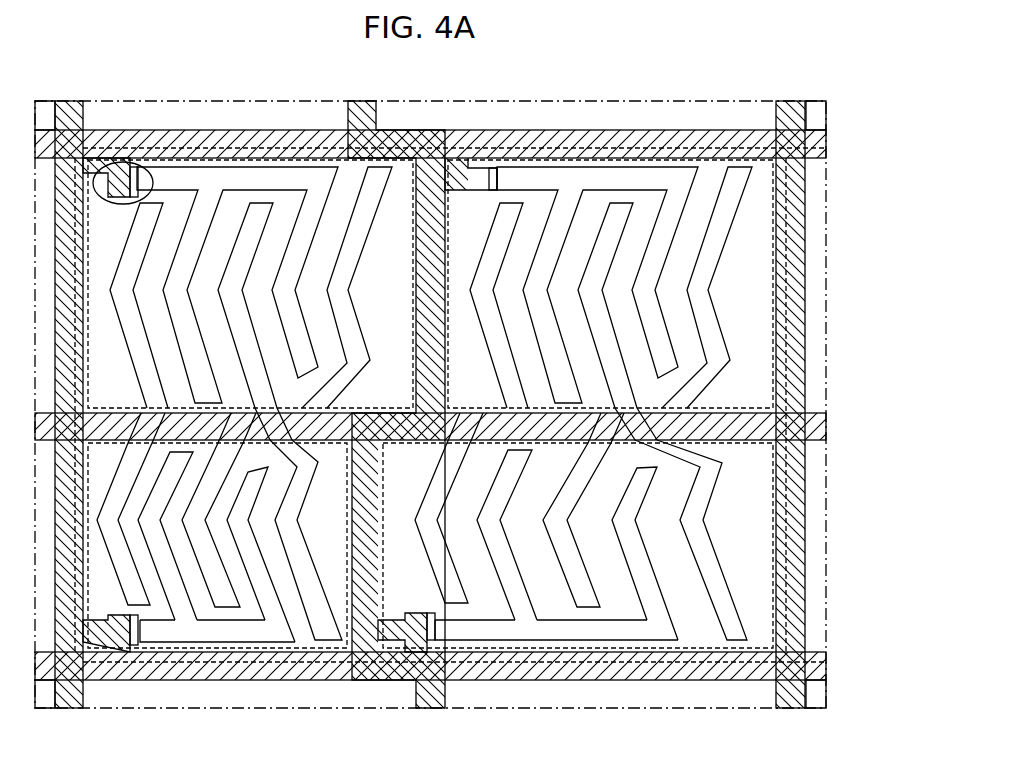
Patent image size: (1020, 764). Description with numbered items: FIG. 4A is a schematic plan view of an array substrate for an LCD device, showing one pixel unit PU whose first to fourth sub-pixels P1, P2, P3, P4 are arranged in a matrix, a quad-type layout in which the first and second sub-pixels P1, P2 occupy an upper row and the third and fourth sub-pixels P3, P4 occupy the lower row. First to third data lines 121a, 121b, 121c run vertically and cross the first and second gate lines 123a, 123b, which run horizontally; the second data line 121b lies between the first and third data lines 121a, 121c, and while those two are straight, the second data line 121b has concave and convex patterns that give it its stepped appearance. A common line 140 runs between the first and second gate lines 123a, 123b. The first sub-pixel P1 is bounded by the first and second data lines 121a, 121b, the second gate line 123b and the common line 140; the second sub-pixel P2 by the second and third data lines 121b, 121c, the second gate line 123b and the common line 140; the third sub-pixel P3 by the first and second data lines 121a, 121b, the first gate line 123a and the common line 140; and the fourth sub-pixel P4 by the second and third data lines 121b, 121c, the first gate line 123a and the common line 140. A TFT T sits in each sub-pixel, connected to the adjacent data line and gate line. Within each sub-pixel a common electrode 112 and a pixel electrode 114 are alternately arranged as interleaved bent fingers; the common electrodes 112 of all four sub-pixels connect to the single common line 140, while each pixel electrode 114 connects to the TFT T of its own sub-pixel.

The pixel unit PU is at (105, 150).
The TFT T is at (128, 162).
The first sub-pixel P1 is at (211, 158).
The second sub-pixel P2 is at (561, 158).
The third sub-pixel P3 is at (246, 652).
The fourth sub-pixel P4 is at (641, 652).
The common electrode 112 is at (348, 272).
The pixel electrode 114 is at (298, 348).
The first gate line 123a is at (826, 662).
The second gate line 123b is at (826, 143).
The common line 140 is at (826, 427).
The first data line 121a is at (68, 695).
The second data line 121b is at (433, 708).
The third data line 121c is at (797, 695).